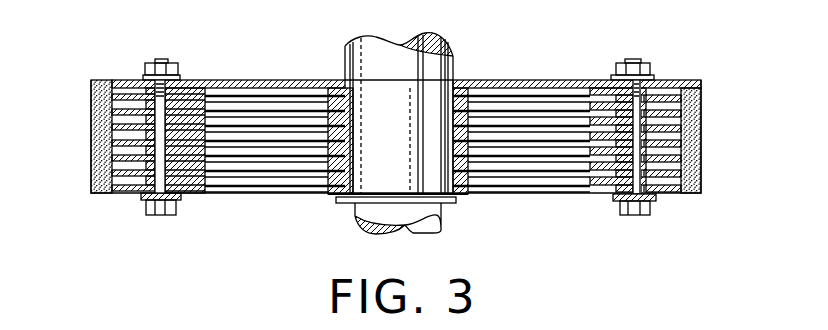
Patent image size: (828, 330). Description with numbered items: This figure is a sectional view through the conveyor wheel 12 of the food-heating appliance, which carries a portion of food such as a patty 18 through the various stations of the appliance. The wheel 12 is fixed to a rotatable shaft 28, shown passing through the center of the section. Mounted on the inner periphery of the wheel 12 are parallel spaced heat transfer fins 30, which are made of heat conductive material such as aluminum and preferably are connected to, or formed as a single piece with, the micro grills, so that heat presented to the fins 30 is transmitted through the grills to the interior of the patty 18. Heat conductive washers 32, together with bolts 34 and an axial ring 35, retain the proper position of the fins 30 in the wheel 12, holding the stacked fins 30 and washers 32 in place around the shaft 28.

The conveyor wheel 12 is at (285, 188).
The patty 18 is at (94, 80).
The rotatable shaft 28 is at (389, 110).
The heat transfer fins 30 is at (197, 133).
The heat conductive washers 32 is at (172, 172).
The bolts 34 is at (155, 50).
The axial ring 35 is at (647, 190).